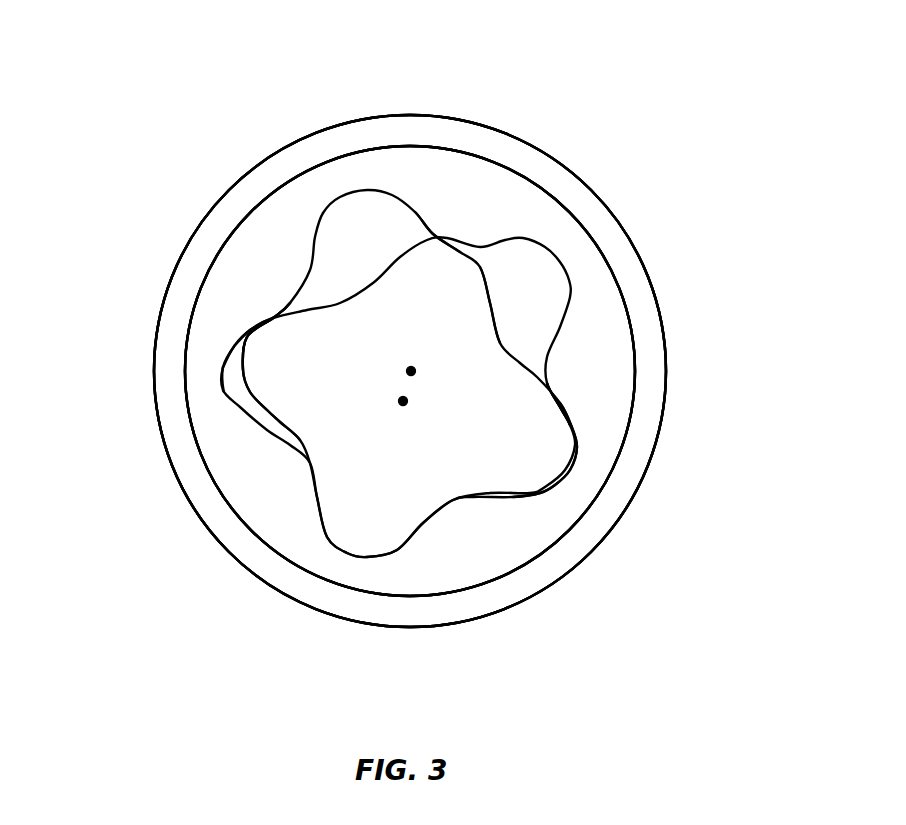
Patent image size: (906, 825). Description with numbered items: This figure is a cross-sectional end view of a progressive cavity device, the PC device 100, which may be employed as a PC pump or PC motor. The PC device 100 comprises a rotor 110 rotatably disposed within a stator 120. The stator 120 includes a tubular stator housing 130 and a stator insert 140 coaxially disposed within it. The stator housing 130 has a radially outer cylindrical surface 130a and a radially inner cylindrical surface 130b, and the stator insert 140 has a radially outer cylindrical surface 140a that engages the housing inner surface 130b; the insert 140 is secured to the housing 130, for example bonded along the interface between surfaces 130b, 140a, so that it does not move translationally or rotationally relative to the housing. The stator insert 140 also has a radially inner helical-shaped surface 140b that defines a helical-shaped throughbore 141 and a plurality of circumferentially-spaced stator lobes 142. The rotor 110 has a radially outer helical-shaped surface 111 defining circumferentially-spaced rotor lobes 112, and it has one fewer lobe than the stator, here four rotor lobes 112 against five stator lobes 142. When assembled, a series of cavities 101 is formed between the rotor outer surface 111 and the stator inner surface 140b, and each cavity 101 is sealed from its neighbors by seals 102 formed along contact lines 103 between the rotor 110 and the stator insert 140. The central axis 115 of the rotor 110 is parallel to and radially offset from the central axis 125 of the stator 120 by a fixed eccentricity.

The PC device 100 is at (158, 46).
The stator 120 is at (412, 113).
The stator housing 130 is at (537, 580).
The radially outer cylindrical surface 130a is at (373, 626).
The radially inner cylindrical surface 130b is at (304, 562).
The radially outer cylindrical surface 140a is at (300, 582).
The stator insert 140 is at (262, 497).
The radially inner helical-shaped surface 140b is at (224, 397).
The rotor 110 is at (472, 467).
The radially outer helical-shaped surface 111 is at (240, 370).
The cavities 101 is at (248, 403).
The rotor lobes 112 is at (443, 256).
The seals 102 is at (273, 318).
The contact lines 103 is at (273, 318).
The helical-shaped throughbore 141 is at (538, 290).
The stator lobes 142 is at (232, 358).
The central axis 125 is at (416, 375).
The central axis 115 is at (409, 404).